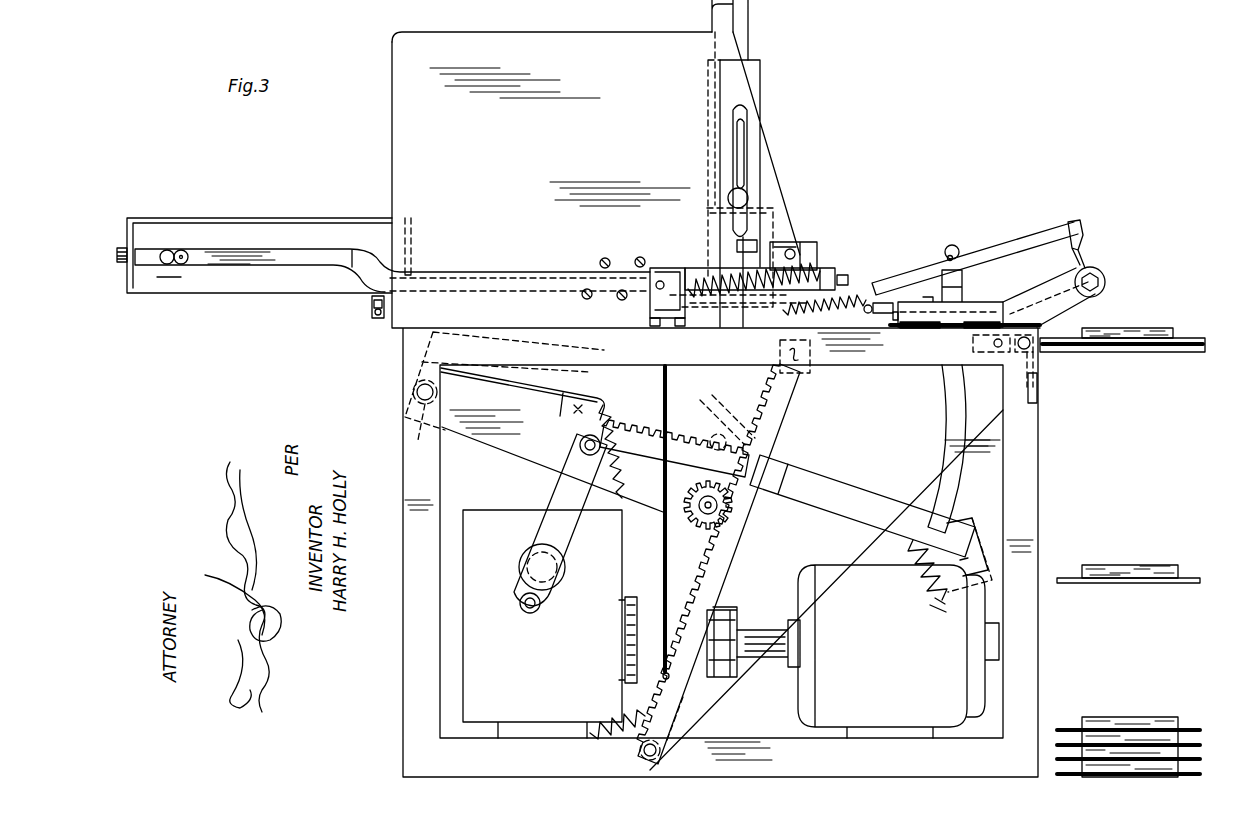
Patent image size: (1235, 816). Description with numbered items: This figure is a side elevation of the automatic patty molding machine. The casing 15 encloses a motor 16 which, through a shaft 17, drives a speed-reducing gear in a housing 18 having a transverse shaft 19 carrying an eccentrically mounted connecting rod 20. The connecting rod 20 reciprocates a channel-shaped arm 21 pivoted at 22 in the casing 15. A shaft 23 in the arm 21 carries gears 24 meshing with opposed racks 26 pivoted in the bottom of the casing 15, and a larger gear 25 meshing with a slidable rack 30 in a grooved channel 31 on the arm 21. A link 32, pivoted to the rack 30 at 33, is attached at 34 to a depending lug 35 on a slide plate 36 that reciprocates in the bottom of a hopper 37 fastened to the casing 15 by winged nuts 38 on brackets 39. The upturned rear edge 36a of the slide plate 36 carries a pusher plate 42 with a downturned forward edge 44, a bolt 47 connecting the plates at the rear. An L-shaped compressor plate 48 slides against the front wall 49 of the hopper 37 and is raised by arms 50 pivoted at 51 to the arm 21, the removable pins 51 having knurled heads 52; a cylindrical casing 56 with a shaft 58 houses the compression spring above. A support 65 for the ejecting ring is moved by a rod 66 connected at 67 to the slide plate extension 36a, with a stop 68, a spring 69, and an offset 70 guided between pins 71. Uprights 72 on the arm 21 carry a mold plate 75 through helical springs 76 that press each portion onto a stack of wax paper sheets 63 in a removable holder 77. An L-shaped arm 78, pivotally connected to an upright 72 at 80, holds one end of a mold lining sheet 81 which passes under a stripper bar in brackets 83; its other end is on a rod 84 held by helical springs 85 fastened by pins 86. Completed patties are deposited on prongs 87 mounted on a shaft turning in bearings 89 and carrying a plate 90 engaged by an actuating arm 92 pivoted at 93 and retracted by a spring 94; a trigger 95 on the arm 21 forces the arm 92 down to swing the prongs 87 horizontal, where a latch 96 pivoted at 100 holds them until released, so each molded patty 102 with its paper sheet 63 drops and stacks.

The casing 15 is at (1030, 494).
The motor 16 is at (846, 696).
The shaft 17 is at (758, 640).
The housing 18 is at (528, 705).
The transverse shaft 19 is at (562, 565).
The connecting rod 20 is at (556, 533).
The channel-shaped arm 21 is at (520, 428).
The pivot 22 is at (422, 423).
The shaft 23 is at (665, 536).
The gear 24 is at (730, 509).
The larger gear 25 is at (668, 512).
The racks 26 is at (780, 410).
The slidable rack 30 is at (634, 428).
The grooved channel 31 is at (815, 495).
The link 32 is at (495, 348).
The pivot 33 is at (576, 410).
The pivotal attachment 34 is at (371, 302).
The depending lug 35 is at (376, 314).
The slide plate 36 is at (250, 294).
The upturned rear edge 36a is at (182, 277).
The hopper 37 is at (403, 118).
The winged nuts 38 is at (656, 322).
The brackets 39 is at (678, 322).
The pusher plate 42 is at (292, 218).
The downturned forward edge 44 is at (411, 250).
The screw-threaded bolt 47 is at (123, 250).
The L-shaped compressor plate 48 is at (704, 227).
The front wall 49 is at (706, 103).
The arms 50 is at (744, 244).
The removable pins 51 is at (712, 424).
The knurled heads 52 is at (748, 198).
The cylindrical casing 56 is at (756, 72).
The shaft 58 is at (748, 20).
The wax paper sheets 63 is at (925, 328).
The arm 65 is at (815, 259).
The support rod 66 is at (508, 275).
The connection 67 is at (146, 256).
The stop 68 is at (801, 247).
The spring 69 is at (660, 275).
The offset 70 is at (352, 250).
The pins 71 is at (638, 256).
The uprights 72 is at (948, 400).
The mold plate 75 is at (986, 303).
The helical springs 76 is at (914, 548).
The removable holder 77 is at (896, 314).
The L-shaped arm 78 is at (1028, 232).
The pivotal connection 80 is at (956, 250).
The mold lining sheet 81 is at (1083, 252).
The supporting brackets 83 is at (1100, 284).
The rod 84 is at (870, 305).
The helical springs 85 is at (822, 305).
The pins 86 is at (780, 330).
The prongs 87 is at (1180, 352).
The bearings 89 is at (1034, 352).
The plate 90 is at (1040, 396).
The actuating arm 92 is at (742, 674).
The pivot 93 is at (640, 750).
The spring 94 is at (648, 704).
The trigger 95 is at (966, 524).
The latch 96 is at (974, 344).
The pivot 100 is at (1000, 349).
The molded patty 102 is at (1122, 328).